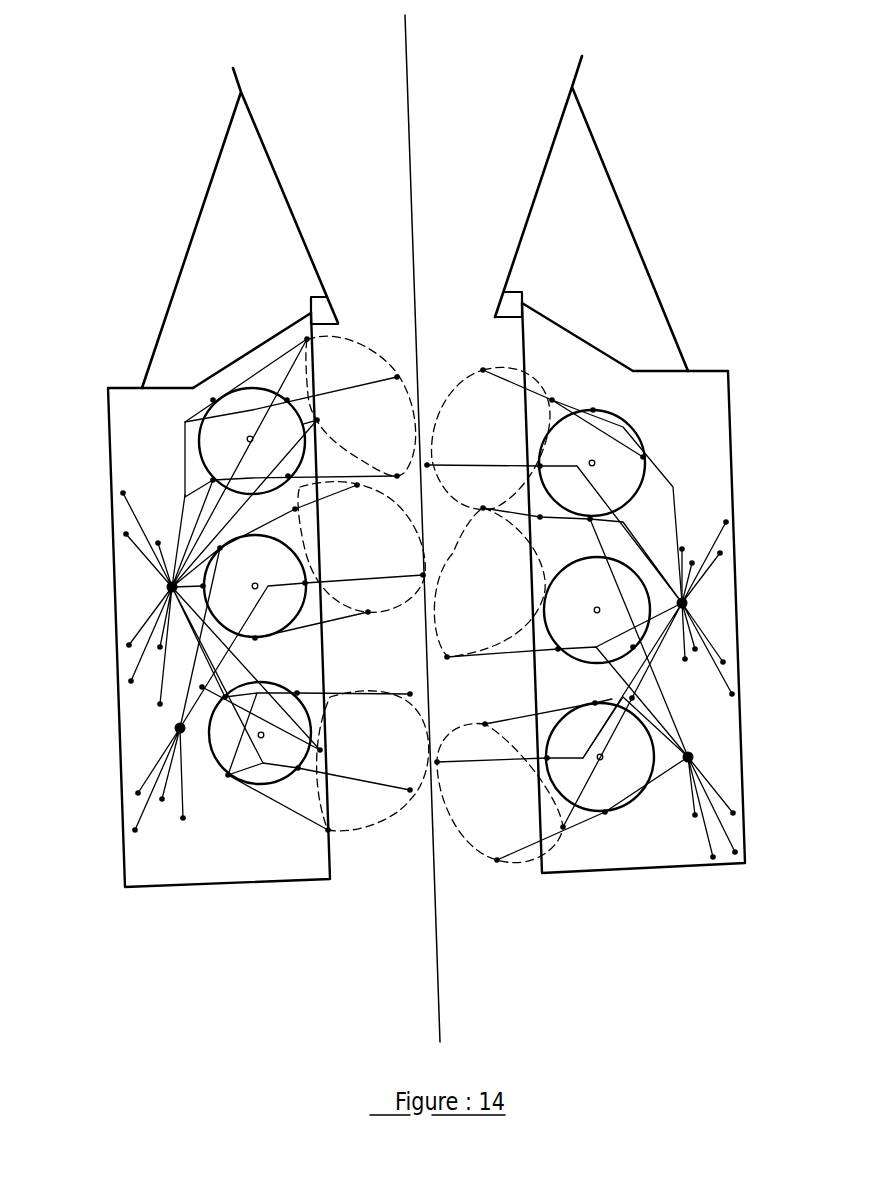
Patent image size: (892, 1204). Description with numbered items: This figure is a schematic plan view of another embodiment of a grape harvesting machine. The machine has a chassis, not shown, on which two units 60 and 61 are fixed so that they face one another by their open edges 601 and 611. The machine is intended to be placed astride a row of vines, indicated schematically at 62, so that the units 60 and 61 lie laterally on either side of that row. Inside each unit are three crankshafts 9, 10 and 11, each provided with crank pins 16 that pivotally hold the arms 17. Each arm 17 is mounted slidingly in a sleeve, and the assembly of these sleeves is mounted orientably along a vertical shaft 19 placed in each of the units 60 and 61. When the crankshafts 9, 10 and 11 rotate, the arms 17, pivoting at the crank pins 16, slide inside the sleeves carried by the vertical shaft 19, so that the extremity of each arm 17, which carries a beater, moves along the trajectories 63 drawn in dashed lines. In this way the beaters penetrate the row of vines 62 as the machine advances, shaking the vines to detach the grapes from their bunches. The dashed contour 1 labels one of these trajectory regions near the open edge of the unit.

The dashed contour region 1 is at (367, 380).
The crankshaft 9 is at (261, 735).
The crankshaft 10 is at (255, 586).
The crankshaft 11 is at (245, 440).
The crank pin 16 is at (213, 400).
The arm 17 is at (167, 390).
The vertical shaft 19 is at (167, 587).
The unit 60 is at (125, 398).
The open edge 601 is at (315, 368).
The unit 61 is at (682, 397).
The open edge 611 is at (520, 347).
The row of vines 62 is at (412, 148).
The trajectory 63 is at (280, 352).